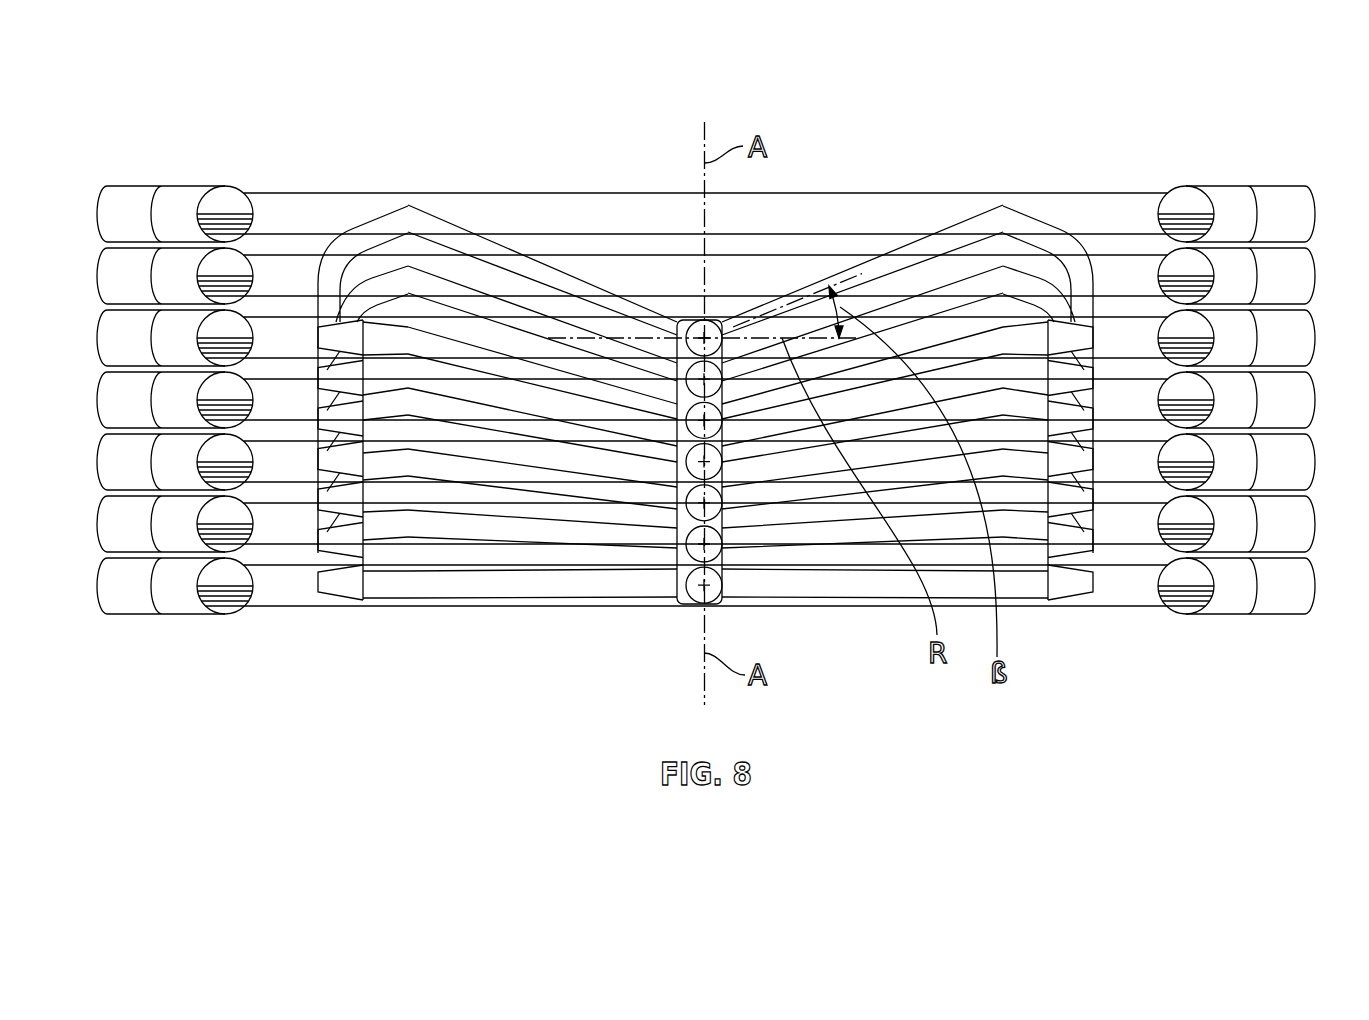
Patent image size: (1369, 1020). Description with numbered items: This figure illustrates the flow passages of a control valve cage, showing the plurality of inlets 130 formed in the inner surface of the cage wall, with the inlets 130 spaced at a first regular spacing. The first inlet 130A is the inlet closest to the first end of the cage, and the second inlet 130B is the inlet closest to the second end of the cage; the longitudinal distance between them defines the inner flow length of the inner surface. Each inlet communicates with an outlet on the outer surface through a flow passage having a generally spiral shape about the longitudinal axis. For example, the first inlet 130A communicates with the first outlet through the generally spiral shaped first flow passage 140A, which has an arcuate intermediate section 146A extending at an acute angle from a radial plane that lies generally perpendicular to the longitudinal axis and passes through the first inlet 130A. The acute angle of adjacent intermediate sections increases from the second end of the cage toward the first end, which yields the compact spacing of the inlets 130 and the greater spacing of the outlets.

The inlets 130 is at (719, 405).
The first inlet 130A is at (699, 318).
The second inlet 130B is at (722, 583).
The first flow passage 140A is at (705, 349).
The intermediate section 146A is at (917, 257).